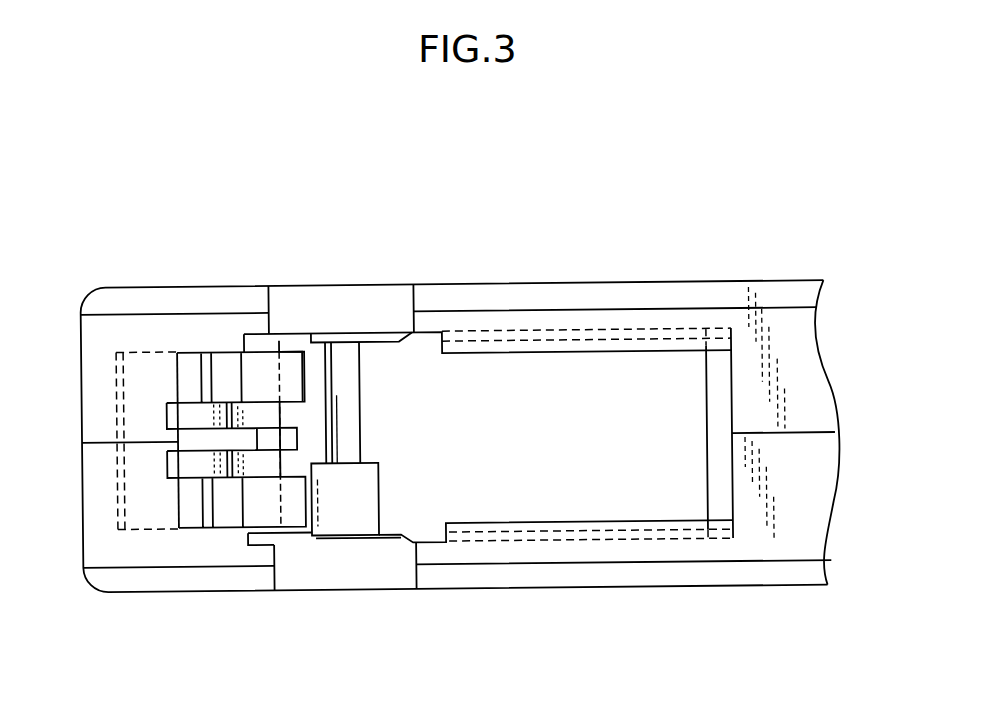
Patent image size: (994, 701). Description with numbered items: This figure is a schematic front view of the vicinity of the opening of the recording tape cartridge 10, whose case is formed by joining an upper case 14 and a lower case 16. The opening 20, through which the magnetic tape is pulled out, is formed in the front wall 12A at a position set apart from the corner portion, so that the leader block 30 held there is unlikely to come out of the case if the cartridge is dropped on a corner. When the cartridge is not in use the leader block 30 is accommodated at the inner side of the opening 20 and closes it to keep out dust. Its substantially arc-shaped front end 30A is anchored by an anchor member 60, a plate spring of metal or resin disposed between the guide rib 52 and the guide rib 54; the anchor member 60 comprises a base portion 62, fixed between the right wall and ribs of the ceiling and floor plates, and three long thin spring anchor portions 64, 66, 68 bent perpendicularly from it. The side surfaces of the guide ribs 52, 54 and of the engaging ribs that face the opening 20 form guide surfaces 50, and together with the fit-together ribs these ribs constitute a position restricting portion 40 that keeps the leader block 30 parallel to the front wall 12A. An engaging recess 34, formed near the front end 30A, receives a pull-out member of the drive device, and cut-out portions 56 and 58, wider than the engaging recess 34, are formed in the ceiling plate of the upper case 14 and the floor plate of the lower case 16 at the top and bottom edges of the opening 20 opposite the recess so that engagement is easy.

The recording tape cartridge 10 is at (103, 274).
The front wall 12A is at (787, 401).
The upper case 14 is at (672, 282).
The lower case 16 is at (672, 590).
The opening 20 is at (463, 509).
The leader block 30 is at (573, 484).
The front end 30A is at (315, 361).
The engaging recess 34 is at (360, 500).
The position restricting portion 40 is at (329, 443).
The guide surfaces 50 is at (328, 341).
The guide rib 52 is at (305, 338).
The guide rib 54 is at (290, 546).
The cut-out portion 56 is at (397, 297).
The cut-out portion 58 is at (397, 576).
The anchor member 60 is at (272, 445).
The base portion 62 is at (120, 480).
The spring anchor portion 64 is at (258, 373).
The spring anchor portion 66 is at (290, 436).
The spring anchor portion 68 is at (257, 501).